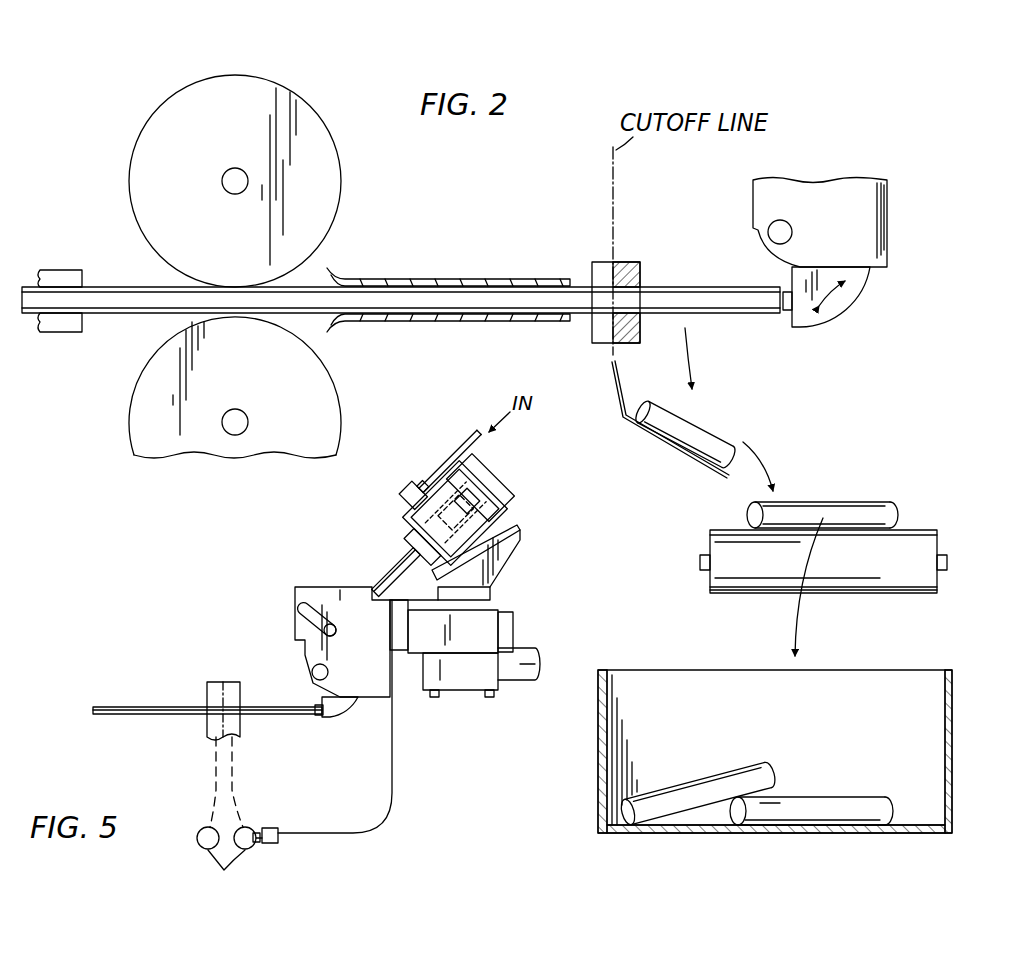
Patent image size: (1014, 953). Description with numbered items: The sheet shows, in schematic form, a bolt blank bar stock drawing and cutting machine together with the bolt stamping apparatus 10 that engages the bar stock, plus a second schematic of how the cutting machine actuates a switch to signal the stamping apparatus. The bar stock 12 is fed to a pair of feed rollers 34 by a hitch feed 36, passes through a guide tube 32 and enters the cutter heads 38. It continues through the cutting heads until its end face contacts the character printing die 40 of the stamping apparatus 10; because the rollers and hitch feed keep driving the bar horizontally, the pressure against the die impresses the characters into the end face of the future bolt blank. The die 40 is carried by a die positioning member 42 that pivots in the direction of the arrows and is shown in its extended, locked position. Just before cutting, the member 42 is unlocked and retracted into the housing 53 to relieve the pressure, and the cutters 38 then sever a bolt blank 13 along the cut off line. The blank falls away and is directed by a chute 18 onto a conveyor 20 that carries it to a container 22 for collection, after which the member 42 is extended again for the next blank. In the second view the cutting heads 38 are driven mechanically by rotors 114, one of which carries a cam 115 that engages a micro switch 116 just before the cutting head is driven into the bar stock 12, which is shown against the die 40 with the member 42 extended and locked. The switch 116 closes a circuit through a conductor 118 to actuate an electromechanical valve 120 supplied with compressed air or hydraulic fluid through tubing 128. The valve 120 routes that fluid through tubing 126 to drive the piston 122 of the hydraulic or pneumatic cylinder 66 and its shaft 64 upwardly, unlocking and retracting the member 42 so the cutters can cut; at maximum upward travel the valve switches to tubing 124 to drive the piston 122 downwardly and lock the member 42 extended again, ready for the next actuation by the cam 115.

In FIG. 2, the bolt stamping apparatus 10 is at (813, 179).
In FIG. 5, the bolt stamping apparatus 10 is at (312, 584).
In FIG. 2, the bar stock 12 is at (115, 287).
In FIG. 5, the bar stock 12 is at (130, 707).
In FIG. 2, the bolt blank 13 is at (706, 425).
In FIG. 2, the chute 18 is at (622, 418).
In FIG. 2, the conveyor 20 is at (745, 590).
In FIG. 2, the container 22 is at (598, 752).
In FIG. 2, the guide tube 32 is at (340, 278).
In FIG. 2, the feed rollers 34 is at (252, 75).
In FIG. 2, the hitch feed 36 is at (64, 333).
In FIG. 2, the cutter heads 38 is at (628, 260).
In FIG. 5, the cutter heads 38 is at (229, 682).
In FIG. 2, the character printing die 40 is at (786, 313).
In FIG. 5, the character printing die 40 is at (323, 718).
In FIG. 2, the die positioning member 42 is at (848, 292).
In FIG. 5, the die positioning member 42 is at (340, 712).
In FIG. 2, the housing 53 is at (880, 221).
In FIG. 5, the shaft 64 is at (380, 578).
In FIG. 5, the hydraulic or pneumatic cylinder 66 is at (483, 498).
In FIG. 5, the rotors 114 is at (226, 819).
In FIG. 5, the cam 115 is at (255, 831).
In FIG. 5, the micro switch 116 is at (276, 845).
In FIG. 5, the conductor 118 is at (392, 755).
In FIG. 5, the electromechanical valve 120 is at (408, 485).
In FIG. 5, the piston 122 is at (500, 547).
In FIG. 5, the tubing 124 is at (470, 476).
In FIG. 5, the tubing 126 is at (407, 515).
In FIG. 5, the tubing 128 is at (443, 462).